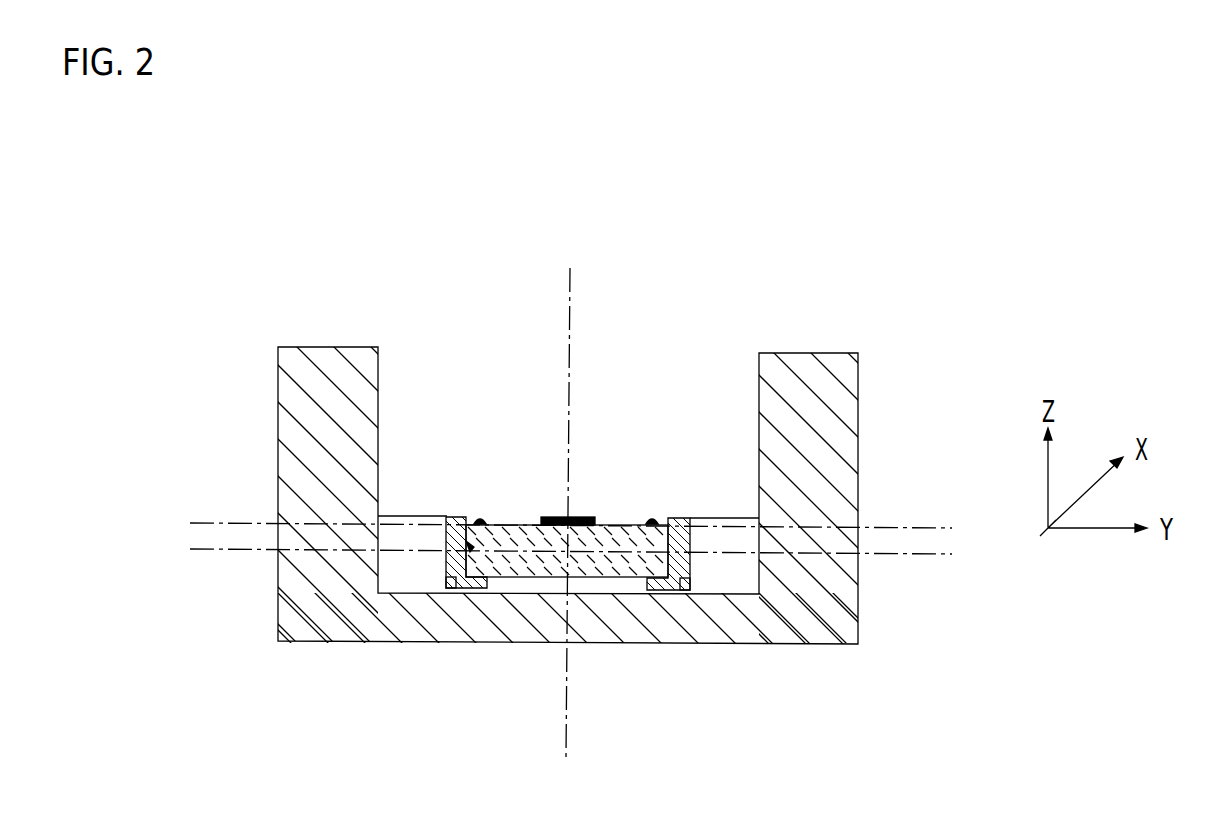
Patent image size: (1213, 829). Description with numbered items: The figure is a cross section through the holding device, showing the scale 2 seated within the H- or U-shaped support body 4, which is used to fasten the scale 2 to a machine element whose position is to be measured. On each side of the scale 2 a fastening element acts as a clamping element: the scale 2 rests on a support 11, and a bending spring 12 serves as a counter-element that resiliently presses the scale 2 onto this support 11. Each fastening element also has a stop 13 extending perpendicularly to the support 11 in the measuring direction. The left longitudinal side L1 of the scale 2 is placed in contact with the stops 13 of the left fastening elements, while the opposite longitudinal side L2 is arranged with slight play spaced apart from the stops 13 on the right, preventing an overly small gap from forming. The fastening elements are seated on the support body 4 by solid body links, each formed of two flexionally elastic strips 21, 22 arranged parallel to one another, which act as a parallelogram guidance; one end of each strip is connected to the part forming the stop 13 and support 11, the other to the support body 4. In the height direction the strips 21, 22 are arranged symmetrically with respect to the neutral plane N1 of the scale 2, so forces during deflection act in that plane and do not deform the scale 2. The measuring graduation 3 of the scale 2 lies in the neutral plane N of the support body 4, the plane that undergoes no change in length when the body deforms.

The scale 2 is at (620, 537).
The measuring graduation 3 is at (548, 514).
The support body 4 is at (815, 392).
The support 11 is at (486, 578).
The bending spring 12 is at (483, 517).
The stop 13 is at (468, 545).
The first flexionally elastic strip 21 is at (403, 540).
The second flexionally elastic strip 22 is at (728, 547).
The neutral plane of the support body N is at (900, 527).
The neutral plane of the scale N1 is at (900, 556).
The left longitudinal side of the scale L1 is at (447, 553).
The right longitudinal side of the scale L2 is at (690, 554).